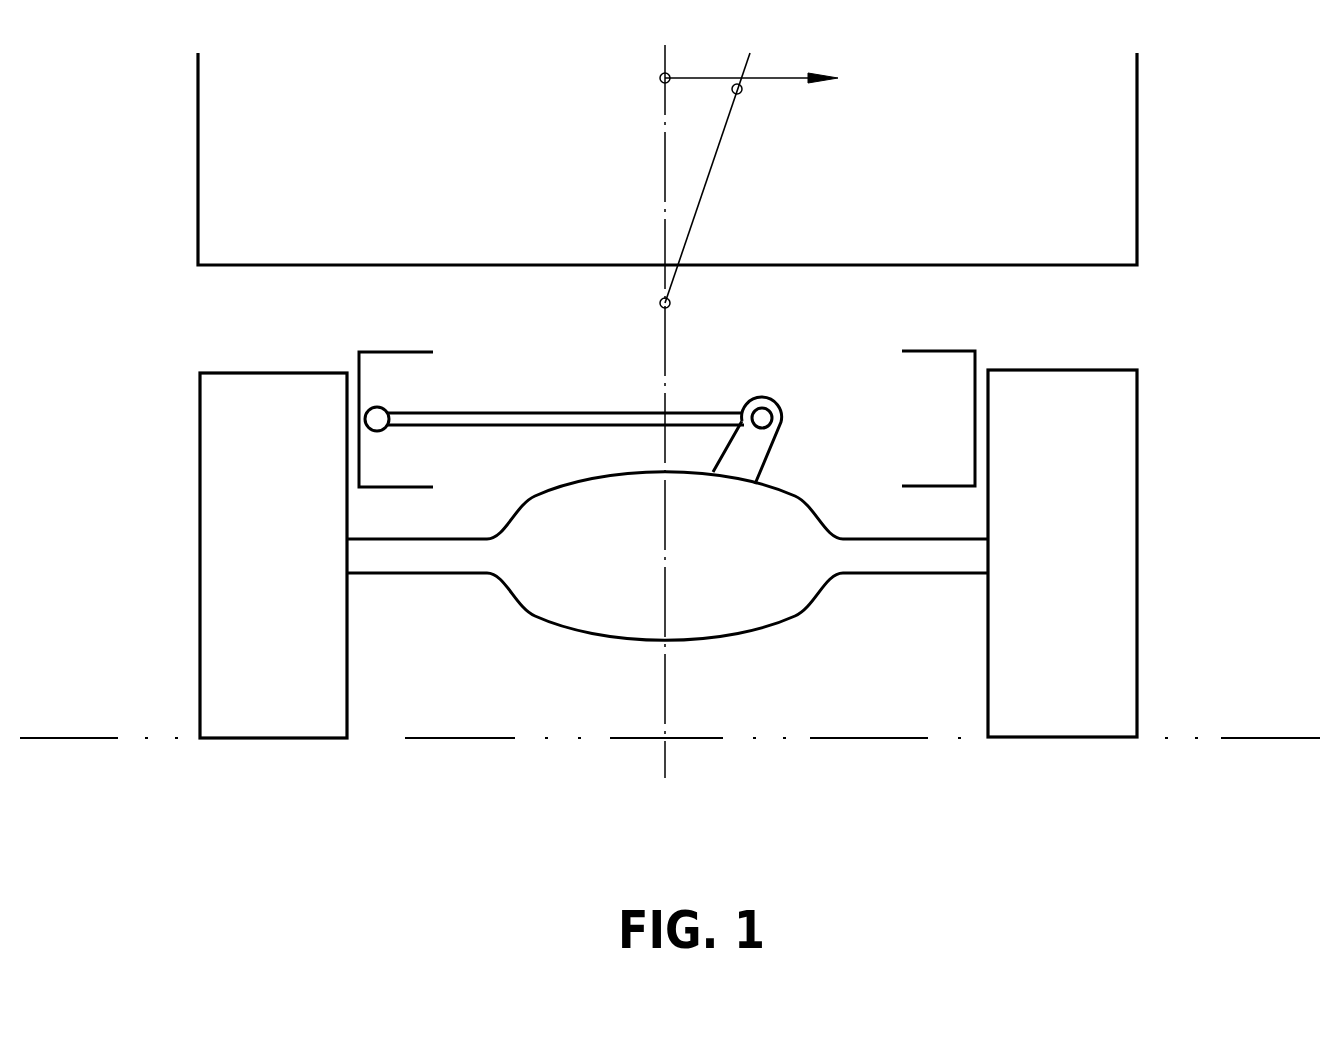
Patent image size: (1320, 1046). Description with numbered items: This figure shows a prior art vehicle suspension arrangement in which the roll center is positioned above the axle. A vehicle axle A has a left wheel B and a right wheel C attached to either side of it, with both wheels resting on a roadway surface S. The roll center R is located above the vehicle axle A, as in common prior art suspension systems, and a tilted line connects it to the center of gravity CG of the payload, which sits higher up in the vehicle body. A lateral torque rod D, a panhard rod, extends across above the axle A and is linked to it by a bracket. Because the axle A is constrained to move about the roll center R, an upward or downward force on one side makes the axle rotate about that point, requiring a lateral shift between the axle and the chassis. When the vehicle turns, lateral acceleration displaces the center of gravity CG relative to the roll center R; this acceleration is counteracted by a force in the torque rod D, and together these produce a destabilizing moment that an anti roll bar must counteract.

The center of gravity CG is at (658, 78).
The roll center R is at (671, 303).
The left wheel B is at (200, 420).
The right wheel C is at (1137, 393).
The vehicle axle A is at (885, 555).
The torque rod D is at (545, 410).
The roadway surface S is at (807, 741).